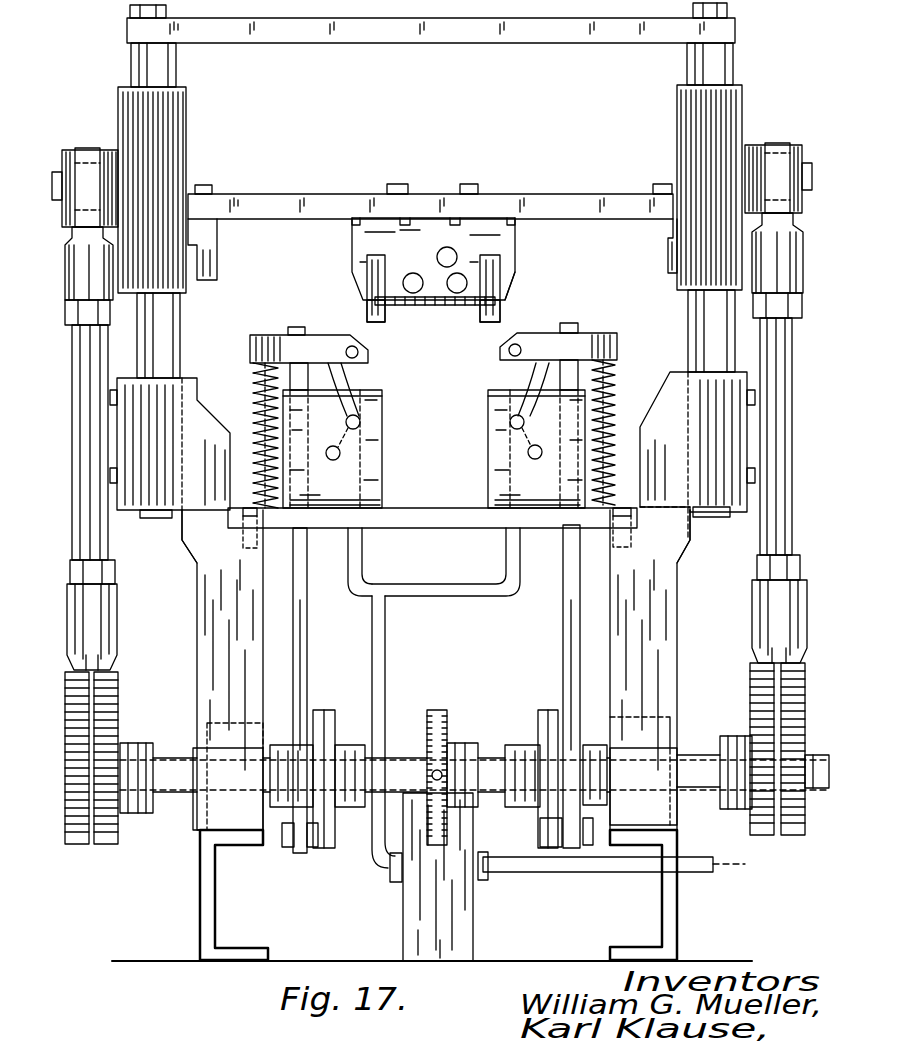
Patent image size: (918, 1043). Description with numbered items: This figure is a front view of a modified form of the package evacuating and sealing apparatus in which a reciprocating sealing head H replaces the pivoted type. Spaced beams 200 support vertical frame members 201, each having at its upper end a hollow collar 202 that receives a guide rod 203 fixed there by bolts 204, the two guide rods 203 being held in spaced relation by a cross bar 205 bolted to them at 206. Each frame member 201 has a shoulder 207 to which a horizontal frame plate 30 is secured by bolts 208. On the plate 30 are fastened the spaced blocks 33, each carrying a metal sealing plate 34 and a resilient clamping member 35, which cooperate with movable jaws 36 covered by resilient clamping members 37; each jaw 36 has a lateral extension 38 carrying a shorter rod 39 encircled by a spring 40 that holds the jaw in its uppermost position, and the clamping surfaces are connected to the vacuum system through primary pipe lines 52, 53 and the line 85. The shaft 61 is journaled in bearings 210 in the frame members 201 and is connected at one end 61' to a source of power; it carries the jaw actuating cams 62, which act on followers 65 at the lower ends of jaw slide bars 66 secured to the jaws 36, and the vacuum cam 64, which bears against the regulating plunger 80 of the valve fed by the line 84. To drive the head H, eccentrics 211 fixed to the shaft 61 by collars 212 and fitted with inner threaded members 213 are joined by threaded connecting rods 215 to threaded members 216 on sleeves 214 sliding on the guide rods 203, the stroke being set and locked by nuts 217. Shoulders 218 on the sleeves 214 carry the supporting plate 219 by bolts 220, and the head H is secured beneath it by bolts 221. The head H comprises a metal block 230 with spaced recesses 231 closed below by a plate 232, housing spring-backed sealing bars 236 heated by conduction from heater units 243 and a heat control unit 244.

The cross bar 205 is at (512, 34).
The bolts 206 is at (130, 17).
The guide rod 203 is at (688, 61).
The sleeve 214 is at (168, 118).
The sealing head supporting plate 219 is at (560, 205).
The bolts 220 is at (232, 178).
The bolts 221 is at (466, 186).
The shoulder 218 is at (212, 246).
The threaded member 216 is at (78, 284).
The nuts 217 is at (66, 326).
The connecting rod 215 is at (88, 460).
The inner threaded member 213 is at (118, 620).
The eccentric 211 is at (112, 722).
The collar 212 is at (142, 815).
The shaft 61 is at (436, 799).
The shaft end 61' is at (814, 802).
The bearings 210 is at (218, 802).
The frame member 201 is at (203, 660).
The beams 200 is at (210, 888).
The hollow collar 202 is at (200, 446).
The bolts 204 is at (116, 392).
The shoulder 207 is at (243, 548).
The bolts 208 is at (256, 548).
The frame plate 30 is at (450, 530).
The rod 39 is at (258, 410).
The helical compression spring 40 is at (272, 452).
The lateral extension 38 is at (265, 338).
The movable jaw 36 is at (433, 356).
The clamping member 37 is at (503, 361).
The clamping member 35 is at (362, 396).
The sealing plate 34 is at (380, 414).
The block 33 is at (385, 502).
The primary pipe line 52 is at (355, 572).
The primary pipe line 53 is at (520, 556).
The line 85 is at (380, 672).
The jaw slide bar 66 is at (306, 652).
The jaw actuating cam 62 is at (327, 716).
The vacuum cam 64 is at (440, 716).
The regulating plunger 80 is at (445, 760).
The jaw cam follower 65 is at (322, 848).
The line 84 is at (540, 872).
The metal block 230 is at (366, 250).
The recess 231 is at (372, 262).
The heat control unit 244 is at (440, 252).
The plate 232 is at (461, 306).
The heater units 243 is at (425, 306).
The sealing bar 236 is at (372, 300).
The reciprocating head H is at (516, 275).